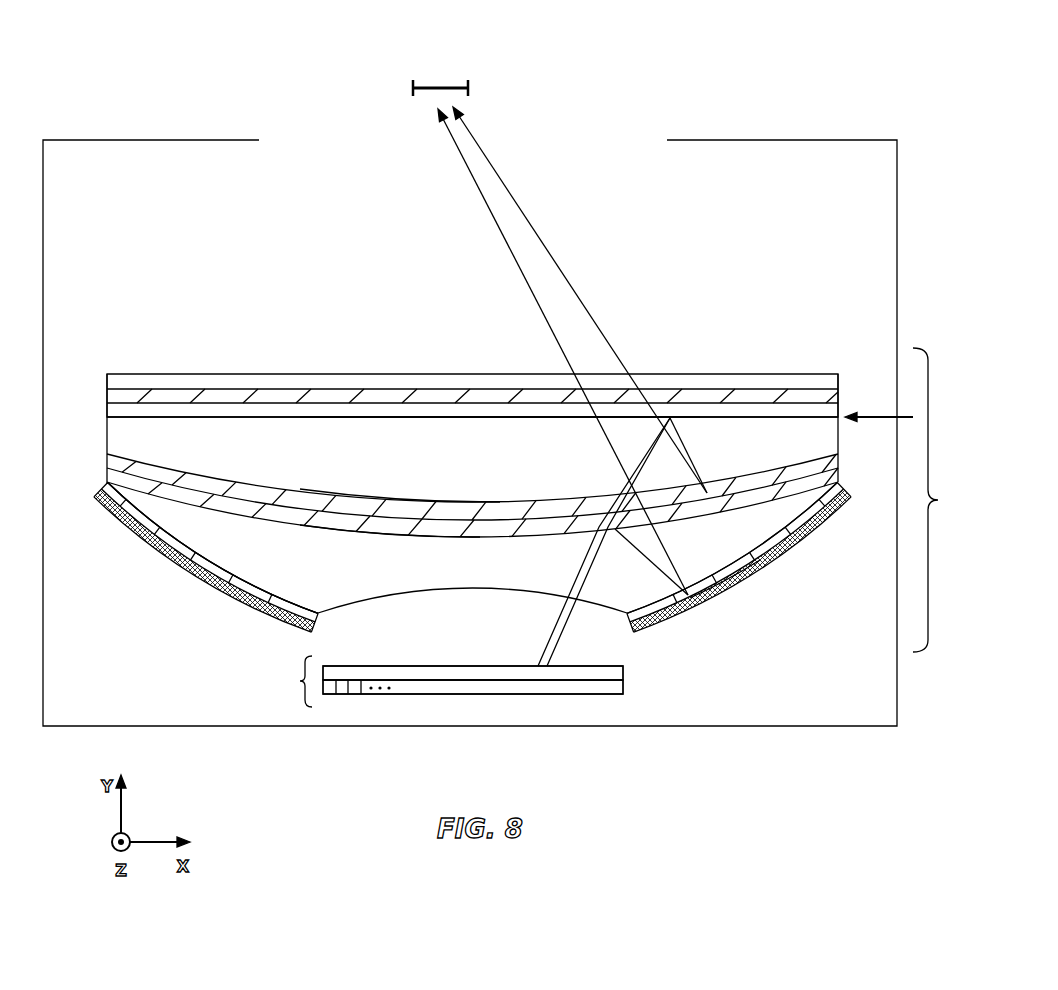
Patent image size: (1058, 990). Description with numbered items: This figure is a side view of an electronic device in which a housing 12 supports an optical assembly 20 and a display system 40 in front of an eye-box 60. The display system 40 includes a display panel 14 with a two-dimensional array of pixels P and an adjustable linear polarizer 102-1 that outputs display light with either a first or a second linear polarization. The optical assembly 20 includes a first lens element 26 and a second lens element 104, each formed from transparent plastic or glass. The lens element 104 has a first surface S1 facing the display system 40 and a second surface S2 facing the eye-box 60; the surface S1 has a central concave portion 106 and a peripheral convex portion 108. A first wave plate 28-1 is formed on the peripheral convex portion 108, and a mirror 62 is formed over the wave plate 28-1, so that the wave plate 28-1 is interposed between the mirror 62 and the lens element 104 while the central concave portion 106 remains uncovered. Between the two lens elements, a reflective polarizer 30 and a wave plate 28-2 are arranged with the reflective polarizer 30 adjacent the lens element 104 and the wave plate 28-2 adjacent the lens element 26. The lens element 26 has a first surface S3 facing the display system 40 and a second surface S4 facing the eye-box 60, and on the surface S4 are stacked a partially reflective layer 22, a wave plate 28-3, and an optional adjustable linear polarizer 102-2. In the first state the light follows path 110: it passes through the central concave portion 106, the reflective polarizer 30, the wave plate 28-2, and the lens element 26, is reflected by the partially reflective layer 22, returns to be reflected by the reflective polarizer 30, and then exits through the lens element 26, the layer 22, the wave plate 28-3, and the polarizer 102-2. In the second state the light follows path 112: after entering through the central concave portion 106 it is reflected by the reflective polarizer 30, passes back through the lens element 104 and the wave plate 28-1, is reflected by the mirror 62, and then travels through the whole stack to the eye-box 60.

The housing 12 is at (760, 140).
The display panel 14 is at (624, 684).
The optical assembly 20 is at (903, 500).
The partially reflective layer 22 is at (108, 410).
The first lens element 26 is at (108, 438).
The first wave plate 28-1 is at (253, 587).
The wave plate 28-2 is at (245, 500).
The wave plate 28-3 is at (148, 396).
The reflective polarizer 30 is at (108, 476).
The display system 40 is at (450, 681).
The eye-box 60 is at (440, 86).
The mirror 62 is at (206, 600).
The adjustable linear polarizer 102-1 is at (430, 666).
The adjustable linear polarizer 102-2 is at (265, 382).
The second lens element 104 is at (752, 585).
The central concave portion 106 is at (415, 578).
The peripheral convex portion 108 is at (188, 546).
The path 110 is at (546, 648).
The path 112 is at (556, 650).
The first surface S1 is at (712, 607).
The second surface S2 is at (362, 538).
The first surface S3 is at (363, 500).
The second surface S4 is at (465, 420).
The pixels P is at (343, 696).